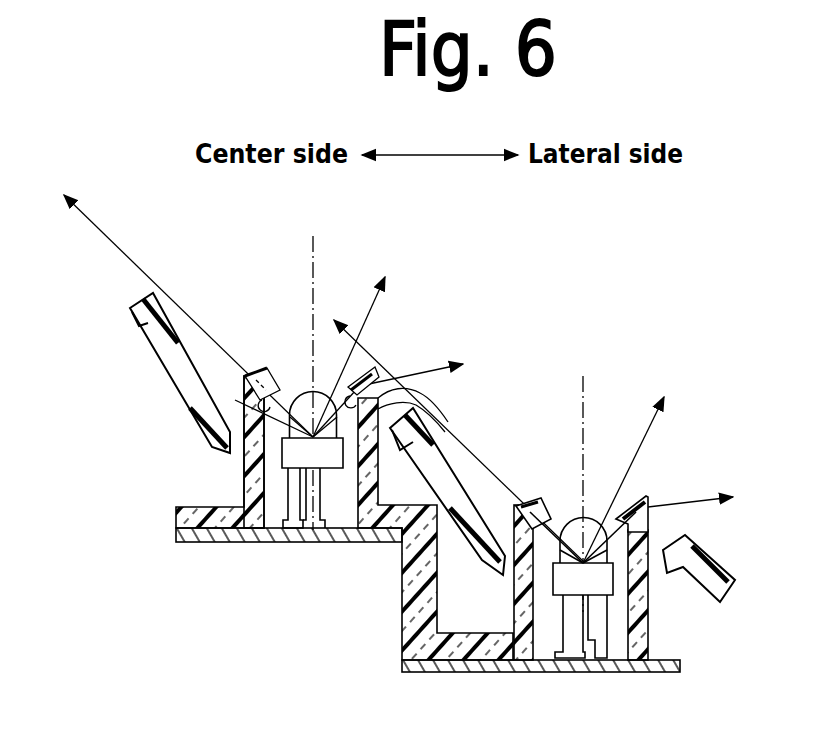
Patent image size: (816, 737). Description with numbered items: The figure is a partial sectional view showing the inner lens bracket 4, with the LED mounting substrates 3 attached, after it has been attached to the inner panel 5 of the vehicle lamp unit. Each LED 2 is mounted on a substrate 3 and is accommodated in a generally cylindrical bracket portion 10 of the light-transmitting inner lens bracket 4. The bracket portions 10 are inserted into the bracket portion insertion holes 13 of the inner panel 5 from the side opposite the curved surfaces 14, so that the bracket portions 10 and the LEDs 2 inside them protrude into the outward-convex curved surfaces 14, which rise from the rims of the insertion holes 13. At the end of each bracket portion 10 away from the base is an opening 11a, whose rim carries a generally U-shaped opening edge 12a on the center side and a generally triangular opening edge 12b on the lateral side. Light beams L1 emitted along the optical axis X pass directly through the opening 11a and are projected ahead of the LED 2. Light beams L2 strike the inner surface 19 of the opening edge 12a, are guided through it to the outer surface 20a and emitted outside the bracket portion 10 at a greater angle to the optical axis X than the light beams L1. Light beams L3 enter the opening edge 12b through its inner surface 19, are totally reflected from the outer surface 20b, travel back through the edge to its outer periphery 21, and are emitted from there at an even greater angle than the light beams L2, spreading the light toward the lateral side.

The LED 2 is at (330, 455).
The substrate 3 is at (189, 540).
The inner lens bracket 4 is at (177, 510).
The inner panel 5 is at (166, 352).
The bracket portion 10 is at (232, 482).
The opening 11a is at (295, 384).
The opening edge 12a is at (262, 388).
The opening edge 12b is at (377, 370).
The bracket portion insertion hole 13 is at (236, 445).
The curved surface 14 is at (181, 340).
The inner surface 19 is at (276, 402).
The outer surface 20a is at (250, 367).
The outer surface 20b is at (368, 368).
The outer periphery 21 is at (428, 407).
The optical axis X is at (448, 413).
The light beam L1 is at (497, 408).
The light beam L2 is at (317, 366).
The light beam L3 is at (560, 429).